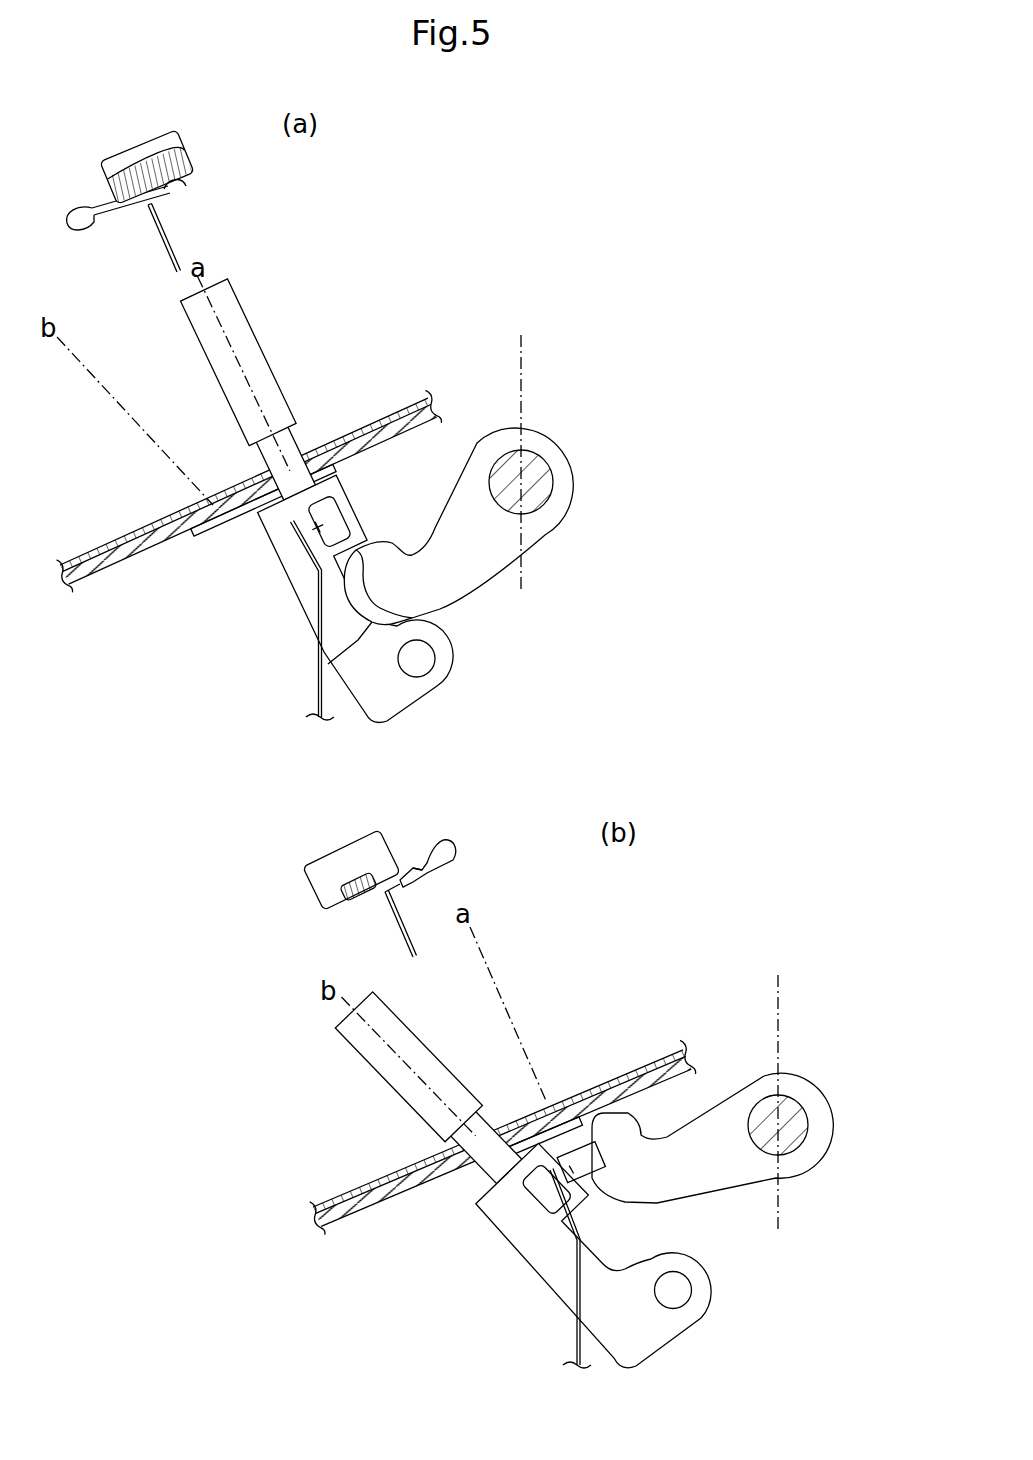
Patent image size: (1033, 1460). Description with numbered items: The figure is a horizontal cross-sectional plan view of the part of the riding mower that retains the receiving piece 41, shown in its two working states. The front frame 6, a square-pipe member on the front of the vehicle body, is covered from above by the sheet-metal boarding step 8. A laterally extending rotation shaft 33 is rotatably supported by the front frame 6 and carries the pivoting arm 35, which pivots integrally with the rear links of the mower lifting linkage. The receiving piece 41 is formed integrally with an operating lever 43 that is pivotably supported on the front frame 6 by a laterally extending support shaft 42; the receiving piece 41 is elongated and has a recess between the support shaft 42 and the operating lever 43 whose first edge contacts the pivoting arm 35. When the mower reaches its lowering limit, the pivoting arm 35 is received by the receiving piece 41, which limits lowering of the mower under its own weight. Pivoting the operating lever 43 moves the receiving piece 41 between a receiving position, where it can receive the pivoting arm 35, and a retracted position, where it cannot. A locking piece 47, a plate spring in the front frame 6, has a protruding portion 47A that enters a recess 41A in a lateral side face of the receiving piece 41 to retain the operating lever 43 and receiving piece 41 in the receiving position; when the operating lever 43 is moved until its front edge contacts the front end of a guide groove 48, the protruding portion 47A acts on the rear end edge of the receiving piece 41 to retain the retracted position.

The front frame 6 is at (122, 568).
The boarding step 8 is at (120, 540).
The rotation shaft 33 is at (540, 458).
The pivoting arm 35 is at (458, 578).
The receiving piece 41 is at (187, 167).
The recess 41A is at (343, 538).
The support shaft 42 is at (418, 663).
The operating lever 43 is at (240, 337).
The locking piece 47 is at (149, 221).
The protruding portion 47A is at (180, 190).
The guide groove 48 is at (74, 216).